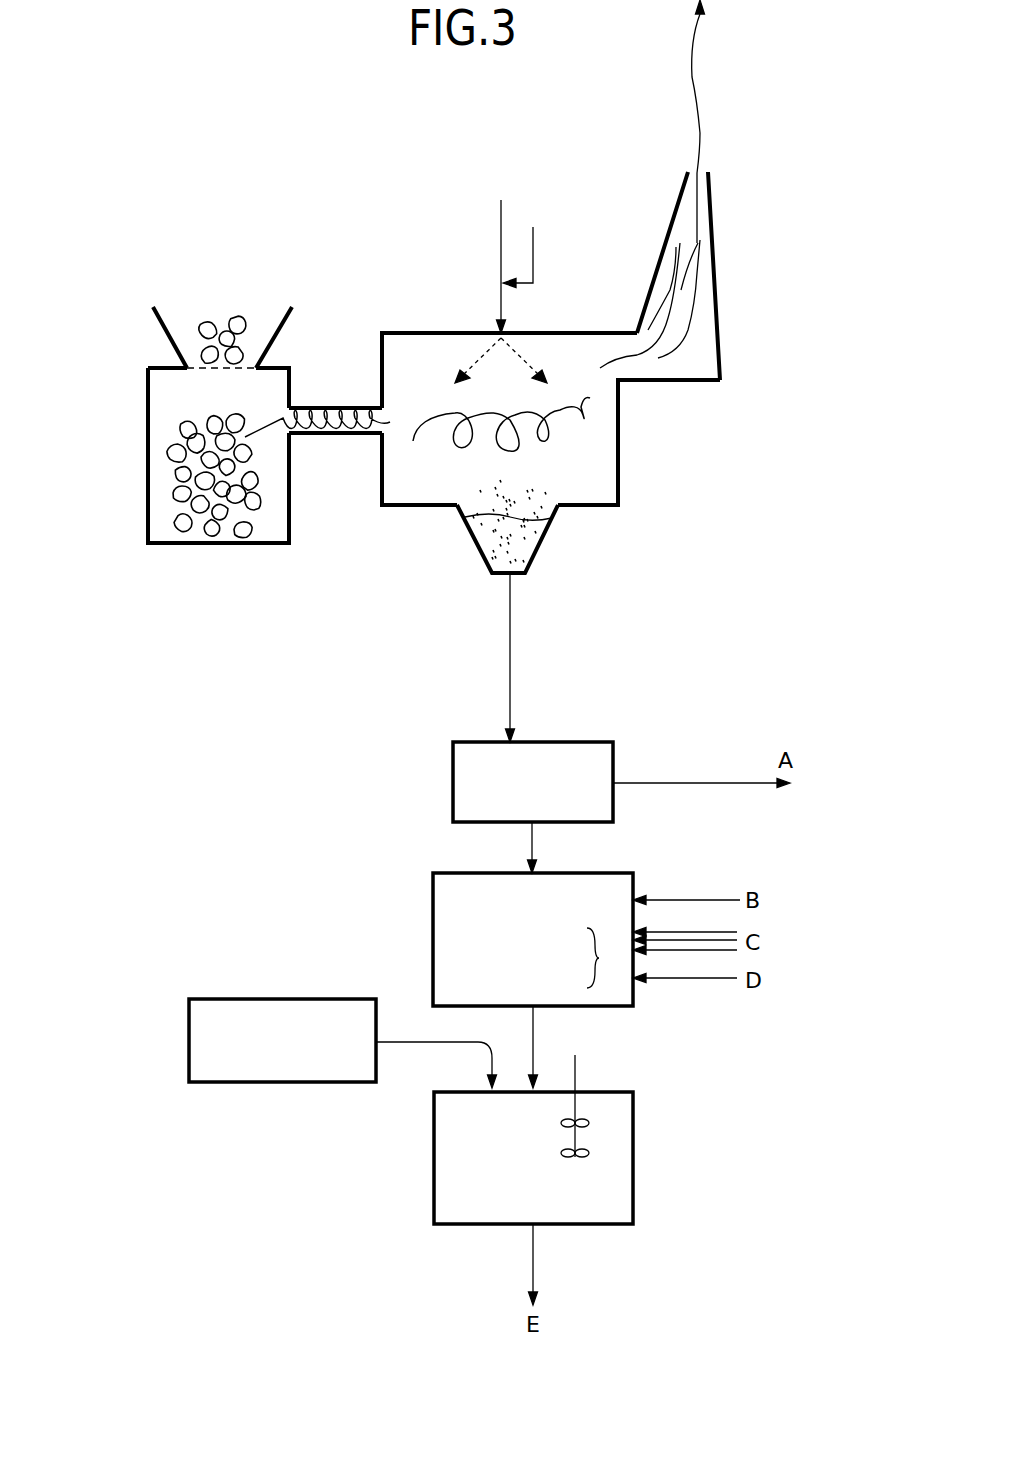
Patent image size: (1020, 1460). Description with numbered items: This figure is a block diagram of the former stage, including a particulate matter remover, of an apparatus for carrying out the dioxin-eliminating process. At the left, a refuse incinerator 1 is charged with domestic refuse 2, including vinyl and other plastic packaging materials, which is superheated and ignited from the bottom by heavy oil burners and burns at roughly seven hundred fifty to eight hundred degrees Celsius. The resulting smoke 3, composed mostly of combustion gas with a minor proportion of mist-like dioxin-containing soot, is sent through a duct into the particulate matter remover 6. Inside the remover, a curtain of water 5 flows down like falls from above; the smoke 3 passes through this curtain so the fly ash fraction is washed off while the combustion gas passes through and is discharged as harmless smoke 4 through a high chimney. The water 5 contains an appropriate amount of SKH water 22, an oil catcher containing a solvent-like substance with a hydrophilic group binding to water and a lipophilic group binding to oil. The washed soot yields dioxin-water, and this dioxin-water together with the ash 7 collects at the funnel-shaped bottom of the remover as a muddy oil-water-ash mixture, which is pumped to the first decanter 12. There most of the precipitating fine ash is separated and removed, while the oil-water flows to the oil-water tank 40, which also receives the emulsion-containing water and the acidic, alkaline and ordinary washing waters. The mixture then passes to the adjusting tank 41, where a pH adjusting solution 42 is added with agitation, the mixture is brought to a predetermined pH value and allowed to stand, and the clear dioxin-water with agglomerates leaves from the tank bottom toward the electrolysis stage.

The refuse incinerator 1 is at (147, 405).
The domestic refuse 2 is at (178, 492).
The smoke 3 is at (331, 410).
The harmless smoke 4 is at (683, 288).
The water 5 is at (499, 233).
The particulate matter remover 6 is at (618, 460).
The ash 7 is at (520, 545).
The first centrifuge (decanter) 12 is at (563, 742).
The SKH water (washing water, oil catcher) 22 is at (533, 262).
The oil-water tank 40 is at (607, 873).
The adjusting tank 41 is at (633, 1152).
The pH adjusting solution 42 is at (285, 999).